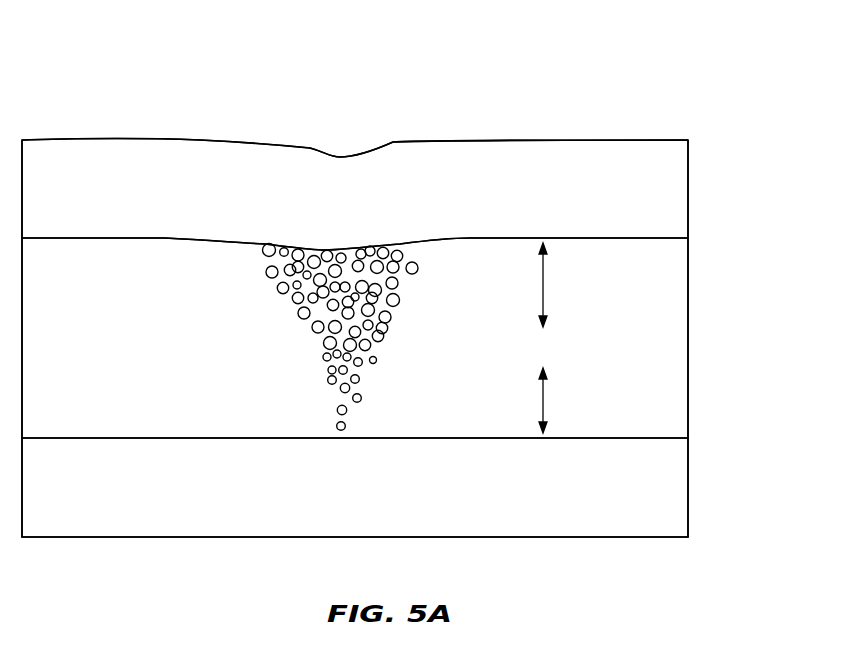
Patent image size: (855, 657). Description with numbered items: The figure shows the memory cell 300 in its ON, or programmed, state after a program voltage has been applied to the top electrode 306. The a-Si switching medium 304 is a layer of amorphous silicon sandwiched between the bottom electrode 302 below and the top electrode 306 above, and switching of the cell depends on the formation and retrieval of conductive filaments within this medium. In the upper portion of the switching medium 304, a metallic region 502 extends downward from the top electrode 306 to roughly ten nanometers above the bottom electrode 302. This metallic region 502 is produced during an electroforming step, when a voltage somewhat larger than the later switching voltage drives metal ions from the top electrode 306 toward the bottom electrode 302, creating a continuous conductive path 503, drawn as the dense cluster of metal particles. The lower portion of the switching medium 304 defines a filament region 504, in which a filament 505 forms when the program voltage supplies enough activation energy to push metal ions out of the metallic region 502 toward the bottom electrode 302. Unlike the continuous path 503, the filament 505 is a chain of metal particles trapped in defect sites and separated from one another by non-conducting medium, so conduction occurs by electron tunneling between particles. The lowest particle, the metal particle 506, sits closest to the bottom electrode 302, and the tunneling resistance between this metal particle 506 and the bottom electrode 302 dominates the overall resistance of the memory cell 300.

The memory cell 300 is at (718, 55).
The bottom electrode 302 is at (688, 480).
The a-Si switching medium 304 is at (688, 310).
The top electrode 306 is at (688, 200).
The metallic region 502 is at (568, 285).
The continuous conductive path 503 is at (425, 258).
The filament region 504 is at (569, 400).
The filament 505 is at (387, 375).
The metal particle 506 is at (337, 421).